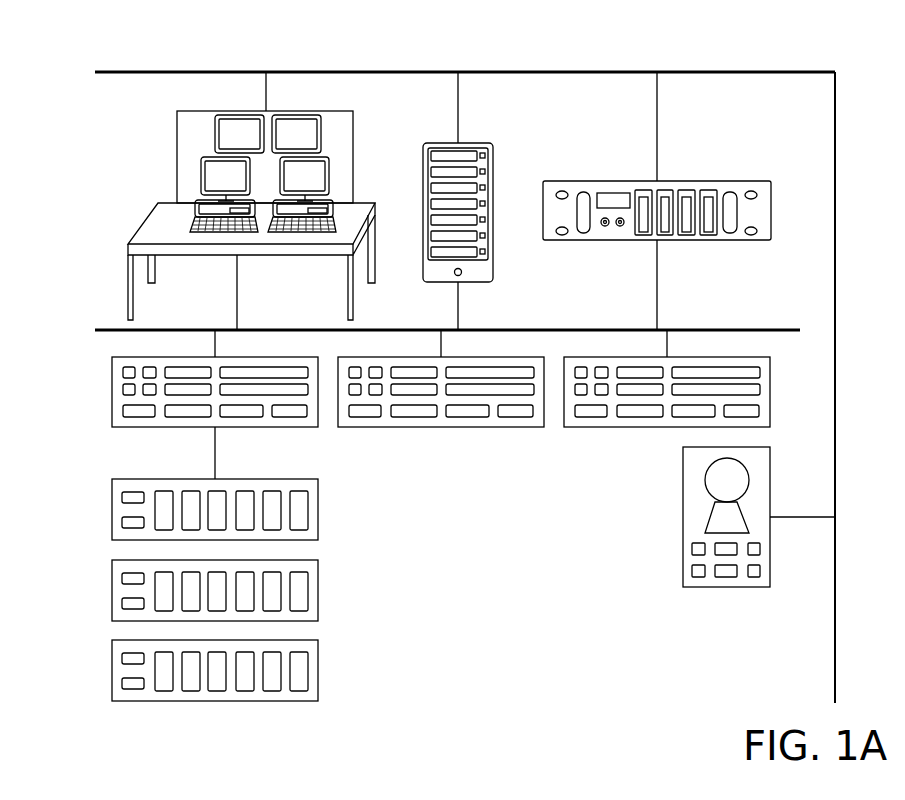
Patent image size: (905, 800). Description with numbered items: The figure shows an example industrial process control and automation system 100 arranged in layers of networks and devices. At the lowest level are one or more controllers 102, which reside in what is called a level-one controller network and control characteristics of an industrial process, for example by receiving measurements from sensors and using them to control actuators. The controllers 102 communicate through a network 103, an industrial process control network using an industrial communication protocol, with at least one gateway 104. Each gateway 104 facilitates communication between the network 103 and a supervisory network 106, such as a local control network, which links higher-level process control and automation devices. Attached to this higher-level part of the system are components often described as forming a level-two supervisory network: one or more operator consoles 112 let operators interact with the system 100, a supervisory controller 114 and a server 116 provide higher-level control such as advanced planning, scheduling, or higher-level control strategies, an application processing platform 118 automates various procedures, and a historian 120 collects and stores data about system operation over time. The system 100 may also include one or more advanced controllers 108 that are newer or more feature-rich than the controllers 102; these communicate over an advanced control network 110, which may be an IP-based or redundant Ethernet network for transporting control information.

The industrial process control and automation system 100 is at (66, 70).
The controllers 102 is at (97, 590).
The network 103 is at (210, 457).
The gateway 104 is at (112, 392).
The supervisory network 106 is at (678, 328).
The advanced controllers 108 is at (725, 588).
The advanced control network 110 is at (362, 71).
The operator consoles 112 is at (175, 155).
The supervisory controller 114 is at (473, 143).
The server 116 is at (678, 181).
The application processing platform 118 is at (428, 428).
The historian 120 is at (657, 430).